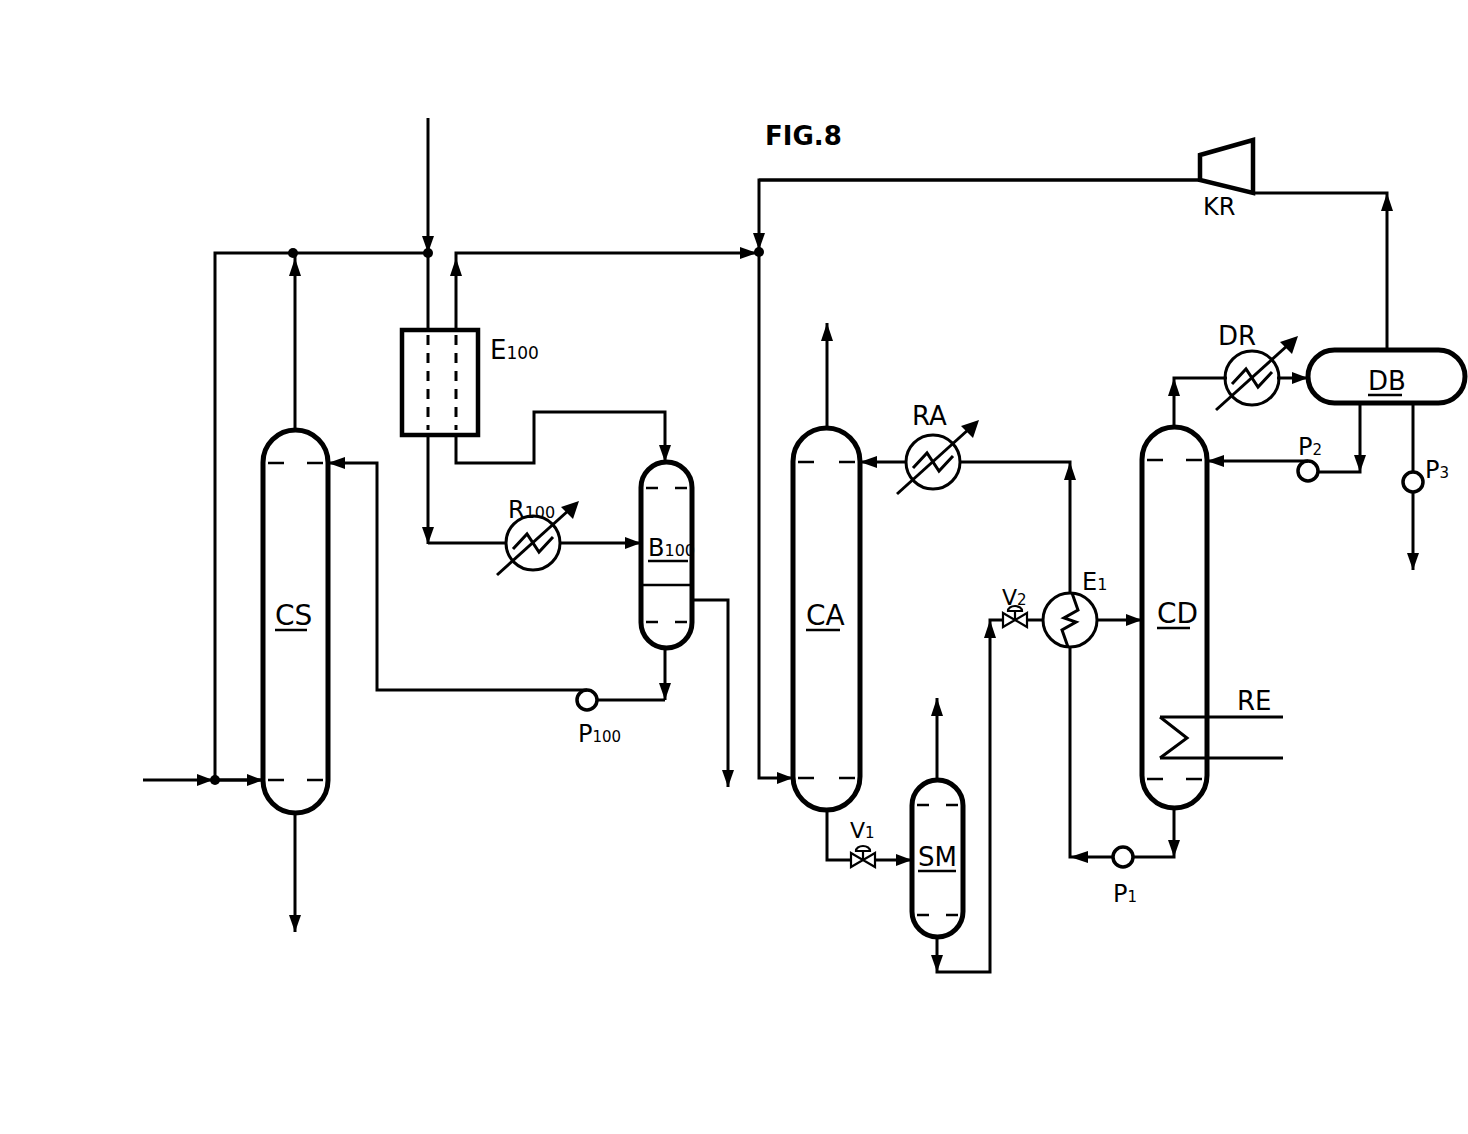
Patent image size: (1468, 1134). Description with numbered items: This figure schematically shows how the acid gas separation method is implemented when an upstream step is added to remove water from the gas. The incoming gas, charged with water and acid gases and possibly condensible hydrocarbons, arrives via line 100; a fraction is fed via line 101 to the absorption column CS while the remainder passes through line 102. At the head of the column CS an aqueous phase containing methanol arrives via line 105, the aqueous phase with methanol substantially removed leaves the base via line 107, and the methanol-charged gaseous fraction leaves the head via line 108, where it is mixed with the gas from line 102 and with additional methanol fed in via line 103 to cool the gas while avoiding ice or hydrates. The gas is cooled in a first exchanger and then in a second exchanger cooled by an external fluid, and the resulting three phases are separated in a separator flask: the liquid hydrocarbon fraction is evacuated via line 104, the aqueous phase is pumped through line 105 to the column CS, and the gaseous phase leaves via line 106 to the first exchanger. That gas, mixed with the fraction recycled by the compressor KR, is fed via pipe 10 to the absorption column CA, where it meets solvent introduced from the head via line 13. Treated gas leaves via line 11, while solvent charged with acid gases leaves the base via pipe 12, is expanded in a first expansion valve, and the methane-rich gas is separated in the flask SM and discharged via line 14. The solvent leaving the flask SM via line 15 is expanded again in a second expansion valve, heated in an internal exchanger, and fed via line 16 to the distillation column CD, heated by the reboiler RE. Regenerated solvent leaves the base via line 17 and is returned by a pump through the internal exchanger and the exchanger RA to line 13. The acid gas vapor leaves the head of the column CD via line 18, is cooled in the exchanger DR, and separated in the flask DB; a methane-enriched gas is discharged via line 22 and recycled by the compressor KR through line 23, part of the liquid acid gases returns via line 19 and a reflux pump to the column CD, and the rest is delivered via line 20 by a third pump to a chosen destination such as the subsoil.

The pipe 10 is at (759, 308).
The line 11 is at (832, 352).
The pipe 12 is at (828, 843).
The line 13 is at (895, 459).
The line 14 is at (936, 749).
The line 15 is at (990, 908).
The line 16 is at (1113, 622).
The line 17 is at (1179, 858).
The line 18 is at (1190, 378).
The line 19 is at (1340, 474).
The line 20 is at (1413, 442).
The line 22 is at (1387, 252).
The line 23 is at (1018, 180).
The line 100 is at (178, 782).
The line 101 is at (232, 782).
The line 102 is at (234, 253).
The line 103 is at (428, 158).
The line 104 is at (728, 715).
The line 105 is at (432, 691).
The line 106 is at (563, 412).
The line 107 is at (295, 853).
The line 108 is at (295, 320).